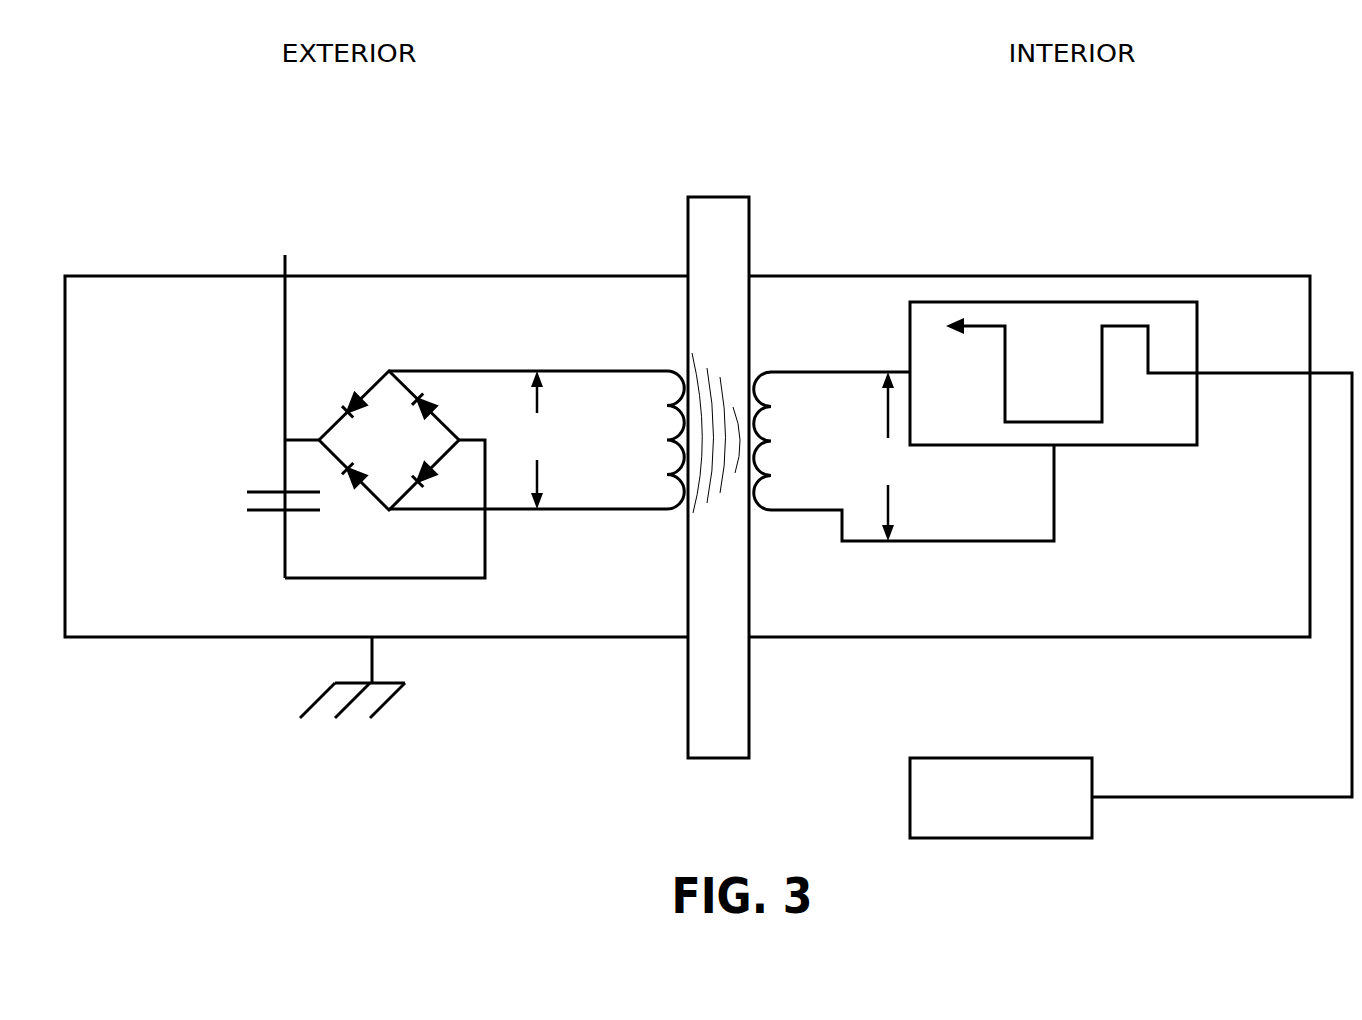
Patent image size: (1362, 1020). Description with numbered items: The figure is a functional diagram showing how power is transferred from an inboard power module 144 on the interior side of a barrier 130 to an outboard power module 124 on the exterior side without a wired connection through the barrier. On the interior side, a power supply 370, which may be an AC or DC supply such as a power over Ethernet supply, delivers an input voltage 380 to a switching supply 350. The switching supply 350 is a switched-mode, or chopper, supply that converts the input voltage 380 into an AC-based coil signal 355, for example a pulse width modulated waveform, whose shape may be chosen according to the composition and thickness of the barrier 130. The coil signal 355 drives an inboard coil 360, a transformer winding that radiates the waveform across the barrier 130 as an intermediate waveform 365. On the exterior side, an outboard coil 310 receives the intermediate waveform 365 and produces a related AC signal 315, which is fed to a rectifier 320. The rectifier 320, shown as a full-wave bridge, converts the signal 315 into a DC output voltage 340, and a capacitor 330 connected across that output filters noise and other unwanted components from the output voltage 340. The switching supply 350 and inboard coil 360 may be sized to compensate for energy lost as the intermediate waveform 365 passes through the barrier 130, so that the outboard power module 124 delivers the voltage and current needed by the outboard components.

The outboard power module 124 is at (376, 456).
The inboard power module 144 is at (1029, 456).
The barrier 130 is at (690, 455).
The outboard coil 310 is at (536, 440).
The signal 315 is at (537, 440).
The rectifier 320 is at (389, 416).
The capacitor 330 is at (253, 491).
The DC output voltage 340 is at (344, 383).
The switching supply 350 is at (1112, 315).
The coil signal 355 is at (892, 456).
The inboard coil 360 is at (904, 456).
The intermediate waveform 365 is at (720, 367).
The power supply 370 is at (1001, 798).
The input voltage 380 is at (1222, 585).